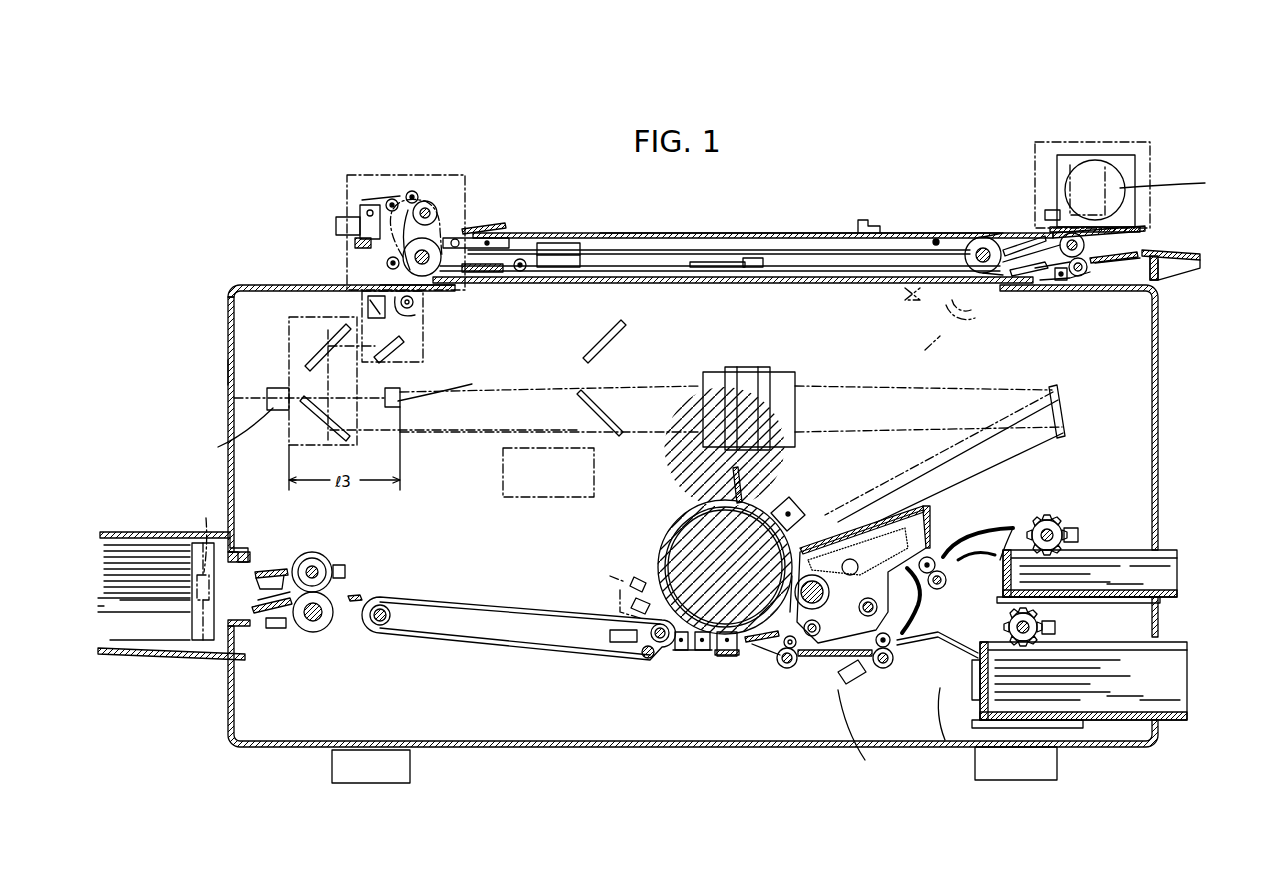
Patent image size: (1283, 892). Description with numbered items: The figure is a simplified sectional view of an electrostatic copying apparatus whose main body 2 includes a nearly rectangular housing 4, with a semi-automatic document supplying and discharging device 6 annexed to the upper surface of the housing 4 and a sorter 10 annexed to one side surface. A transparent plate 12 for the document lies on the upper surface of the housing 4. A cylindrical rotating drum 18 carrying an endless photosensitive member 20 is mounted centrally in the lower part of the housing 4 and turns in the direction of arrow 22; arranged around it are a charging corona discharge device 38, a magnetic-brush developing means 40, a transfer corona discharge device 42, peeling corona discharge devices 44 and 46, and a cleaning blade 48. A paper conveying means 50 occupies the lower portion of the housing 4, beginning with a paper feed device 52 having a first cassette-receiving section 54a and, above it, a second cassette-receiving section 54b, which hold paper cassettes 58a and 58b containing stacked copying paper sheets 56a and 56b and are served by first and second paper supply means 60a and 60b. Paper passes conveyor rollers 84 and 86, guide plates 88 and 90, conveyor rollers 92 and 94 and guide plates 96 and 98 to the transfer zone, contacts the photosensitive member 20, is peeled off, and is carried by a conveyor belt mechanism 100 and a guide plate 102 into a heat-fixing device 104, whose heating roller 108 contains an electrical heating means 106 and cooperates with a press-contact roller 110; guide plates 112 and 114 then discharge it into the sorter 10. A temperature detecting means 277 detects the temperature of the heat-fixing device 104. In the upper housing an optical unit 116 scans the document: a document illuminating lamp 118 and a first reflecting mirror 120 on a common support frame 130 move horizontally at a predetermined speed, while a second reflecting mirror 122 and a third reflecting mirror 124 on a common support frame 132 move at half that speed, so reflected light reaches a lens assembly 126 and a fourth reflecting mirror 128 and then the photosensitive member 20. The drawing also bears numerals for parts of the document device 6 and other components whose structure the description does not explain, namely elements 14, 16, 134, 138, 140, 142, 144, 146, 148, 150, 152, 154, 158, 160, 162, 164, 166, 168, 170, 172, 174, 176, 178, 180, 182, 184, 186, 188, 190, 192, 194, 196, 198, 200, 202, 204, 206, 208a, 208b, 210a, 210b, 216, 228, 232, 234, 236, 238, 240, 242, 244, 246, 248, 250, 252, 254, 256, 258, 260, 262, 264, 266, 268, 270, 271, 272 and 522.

The main body 2 is at (1160, 364).
The housing 4 is at (228, 370).
The semi-automatic document supplying and discharging device 6 is at (812, 170).
The sorter 10 is at (172, 604).
The transparent plate 12 is at (745, 268).
The motor assembly 14 is at (1150, 163).
The scanning carriage 16 is at (745, 282).
The rotating drum 18 is at (714, 518).
The photosensitive member 20 is at (725, 510).
The arrow 22 is at (674, 566).
The charging corona discharge device 38 is at (790, 504).
The developing means 40 is at (915, 558).
The transfer corona discharge device 42 is at (727, 658).
The peeling corona discharge device 44 is at (702, 652).
The peeling corona discharge device 46 is at (680, 652).
The cleaning blade 48 is at (740, 478).
The paper conveying means 50 is at (815, 700).
The paper feed device 52 is at (1086, 613).
The first cassette-receiving section 54a is at (1070, 729).
The second cassette-receiving section 54b is at (1078, 610).
The copying paper sheets 56a is at (1079, 681).
The copying paper sheets 56b is at (1090, 573).
The paper cassette 58a is at (1172, 742).
The paper cassette 58b is at (1161, 600).
The first paper supply means 60a is at (1043, 620).
The second paper supply means 60b is at (1050, 516).
The conveyor roller 84 is at (894, 663).
The conveyor roller 86 is at (891, 643).
The guide plate 88 is at (836, 658).
The guide plate 90 is at (855, 680).
The conveyor roller 92 is at (784, 668).
The conveyor roller 94 is at (794, 650).
The guide plate 96 is at (756, 643).
The guide plate 98 is at (760, 648).
The conveyor belt mechanism 100 is at (508, 614).
The guide plate 102 is at (352, 602).
The heat-fixing device 104 is at (325, 610).
The electrical heating means 106 is at (312, 566).
The heating roller 108 is at (320, 558).
The press-contact roller 110 is at (313, 632).
The guide plate 112 is at (265, 616).
The guide plate 114 is at (262, 567).
The optical unit 116 is at (447, 331).
The document illuminating lamp 118 is at (416, 308).
The first reflecting mirror 120 is at (400, 348).
The second reflecting mirror 122 is at (308, 350).
The third reflecting mirror 124 is at (330, 420).
The lens assembly 126 is at (750, 370).
The fourth reflecting mirror 128 is at (1064, 404).
The support frame 130 is at (979, 249).
The support frame 132 is at (752, 232).
The carriage rail 134 is at (612, 276).
The stopper 138 is at (868, 221).
The rail 140 is at (668, 283).
The rail 142 is at (690, 283).
The plate 144 is at (1130, 263).
The drive unit 146 is at (410, 195).
The plate 148 is at (1106, 264).
The plate 150 is at (1140, 230).
The lever 152 is at (1025, 250).
The bracket 154 is at (1186, 266).
The bracket 158 is at (1170, 250).
The roller 160 is at (1081, 276).
The switch 162 is at (1056, 278).
The roller 164 is at (1062, 242).
The lever 166 is at (1064, 282).
The switch 168 is at (1050, 210).
The wire 170 is at (812, 248).
The wire 172 is at (652, 266).
The arm 174 is at (980, 270).
The base 176 is at (412, 268).
The belt 178 is at (437, 212).
The pulley 180 is at (430, 250).
The pulley 182 is at (428, 203).
The arm 184 is at (475, 243).
The pin 186 is at (935, 240).
The motor 188 is at (1120, 182).
The stopper 190 is at (753, 268).
The plate 192 is at (484, 272).
The roller 194 is at (524, 271).
The block 196 is at (560, 243).
The roller 198 is at (387, 262).
The roller 200 is at (411, 191).
The tray bottom 202 is at (172, 650).
The tray plate 204 is at (180, 615).
The opening 206 is at (232, 628).
The detector 208a is at (965, 700).
The detector 208b is at (1002, 560).
The switch 210a is at (1060, 630).
The switch 210b is at (1080, 534).
The guide 216 is at (950, 645).
The paddle 228 is at (973, 550).
The detector 232 is at (885, 700).
The detector 234 is at (622, 648).
The detector 236 is at (281, 632).
The detector 238 is at (872, 684).
The pulley 240 is at (625, 618).
The detector 242 is at (270, 587).
The detector unit 244 is at (609, 564).
The sensor 246 is at (635, 604).
The sensor 248 is at (640, 578).
The sensor line 250 is at (624, 585).
The detector 252 is at (270, 396).
The detector 254 is at (400, 395).
The detector 256 is at (205, 642).
The lever 258 is at (1032, 243).
The lever 260 is at (1030, 268).
The switch 262 is at (1043, 270).
The plate 264 is at (490, 233).
The block 266 is at (348, 222).
The bracket 268 is at (362, 205).
The block 270 is at (358, 240).
The roller 271 is at (390, 199).
The arm 272 is at (385, 198).
The temperature detecting means 277 is at (345, 572).
The control unit 522 is at (503, 473).